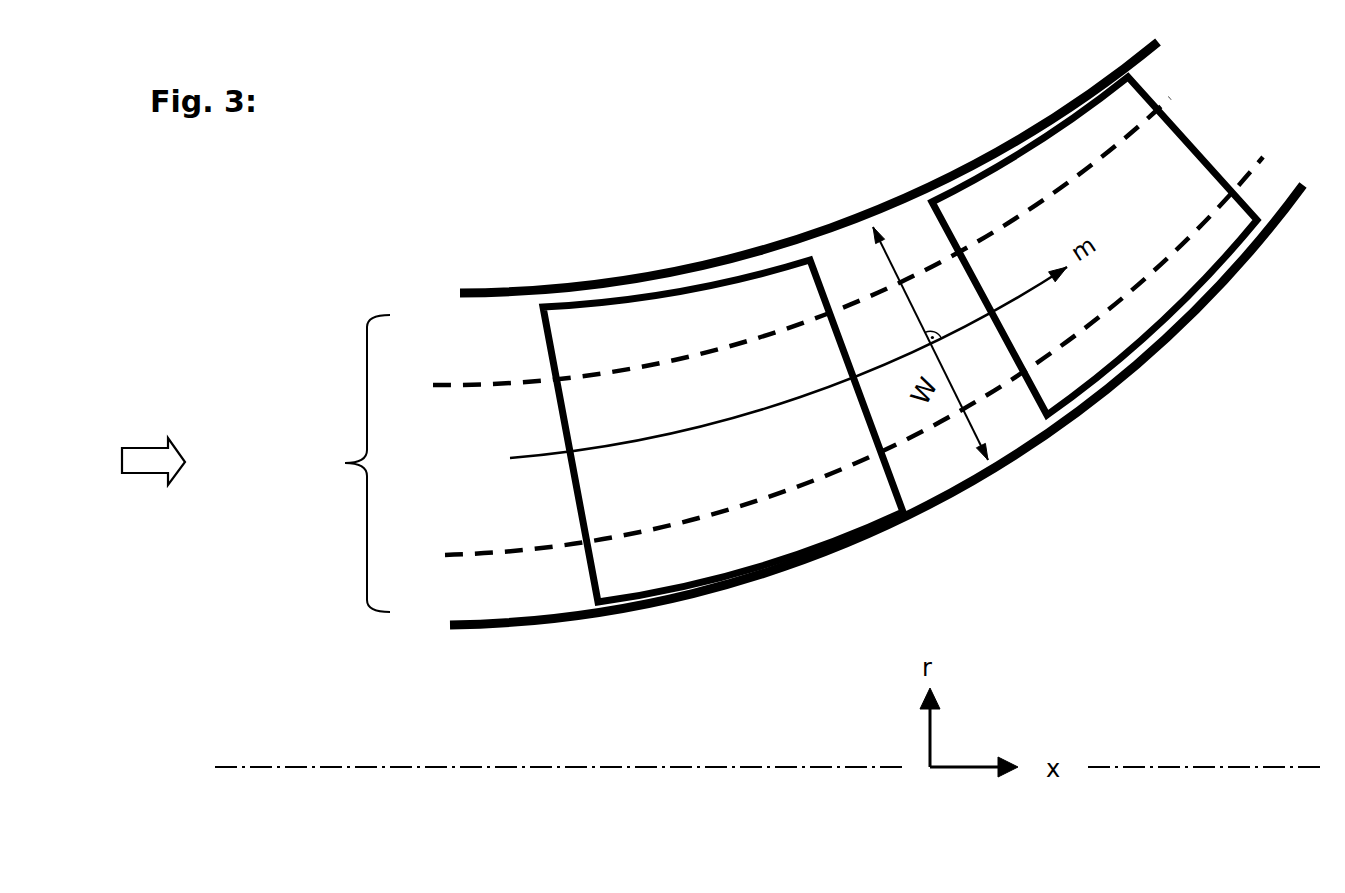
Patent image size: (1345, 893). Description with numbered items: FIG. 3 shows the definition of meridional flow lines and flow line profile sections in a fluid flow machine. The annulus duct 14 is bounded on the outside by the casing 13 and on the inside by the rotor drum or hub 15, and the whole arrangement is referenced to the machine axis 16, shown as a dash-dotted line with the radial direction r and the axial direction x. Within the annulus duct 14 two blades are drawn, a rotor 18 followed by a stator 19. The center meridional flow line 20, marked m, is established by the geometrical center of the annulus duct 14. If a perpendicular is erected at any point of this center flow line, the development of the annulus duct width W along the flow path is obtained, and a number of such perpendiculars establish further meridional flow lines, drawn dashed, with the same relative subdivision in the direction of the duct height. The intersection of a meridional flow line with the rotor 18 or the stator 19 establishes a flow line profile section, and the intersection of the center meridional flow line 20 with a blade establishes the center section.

The casing 13 is at (487, 287).
The annulus duct 14 is at (338, 463).
The rotor drum 1 (hub) 15 is at (508, 625).
The machine axis 16 is at (438, 773).
The rotor 18 is at (723, 397).
The stator 19 is at (1094, 246).
The center meridional flow line 20 is at (510, 458).